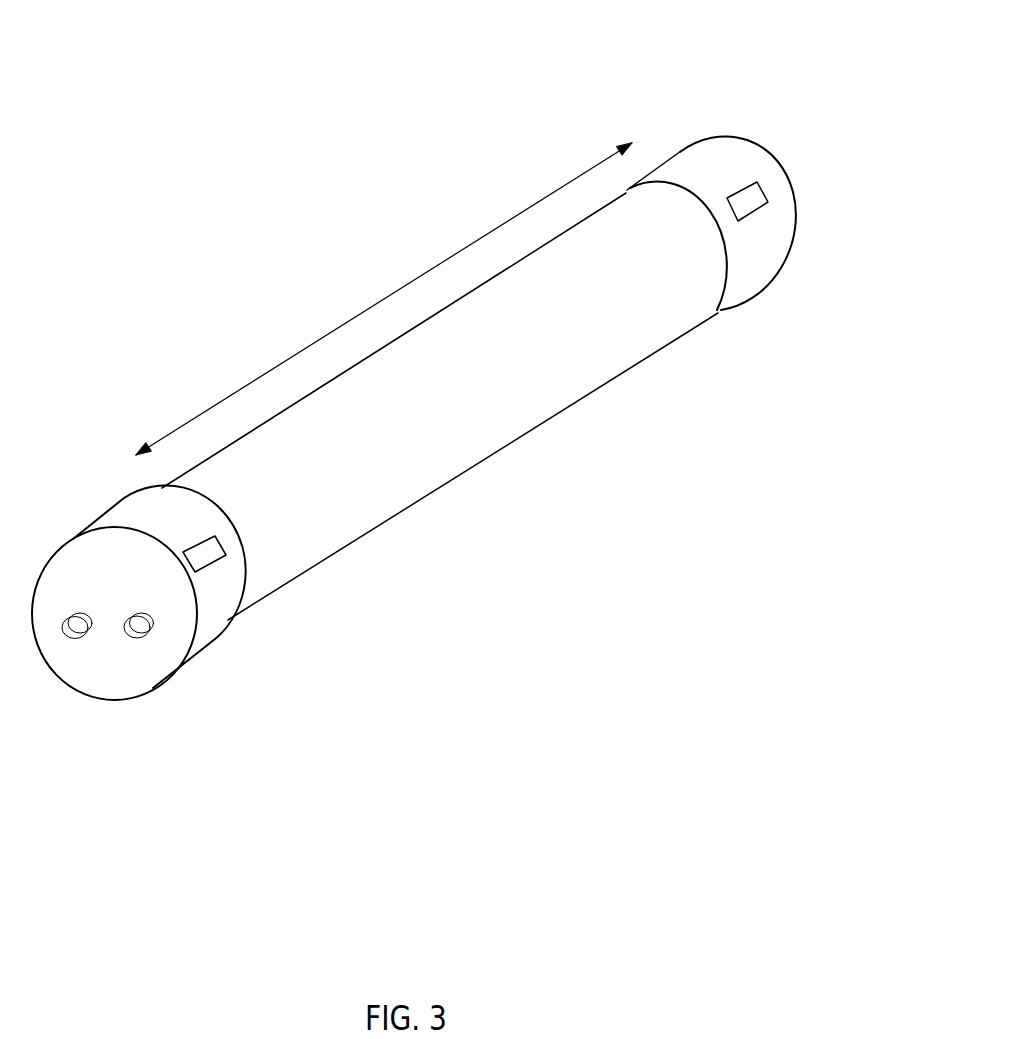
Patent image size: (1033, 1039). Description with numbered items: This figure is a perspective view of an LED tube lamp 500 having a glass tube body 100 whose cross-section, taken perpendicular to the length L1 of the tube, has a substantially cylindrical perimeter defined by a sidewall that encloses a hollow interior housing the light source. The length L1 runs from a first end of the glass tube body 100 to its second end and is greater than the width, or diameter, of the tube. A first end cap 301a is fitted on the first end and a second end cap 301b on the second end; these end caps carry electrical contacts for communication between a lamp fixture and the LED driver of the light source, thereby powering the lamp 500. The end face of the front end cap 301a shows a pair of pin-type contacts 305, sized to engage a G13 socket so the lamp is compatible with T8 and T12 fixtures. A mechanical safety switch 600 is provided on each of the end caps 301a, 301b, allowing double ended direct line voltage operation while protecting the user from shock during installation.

The LED tube lamp 500 is at (178, 156).
The glass tube body 100 is at (488, 440).
The first end cap 301a is at (155, 578).
The second end cap 301b is at (718, 132).
The contacts 305 is at (138, 625).
The mechanical safety switch 600 is at (740, 193).
The length of the glass tube body L1 is at (384, 299).